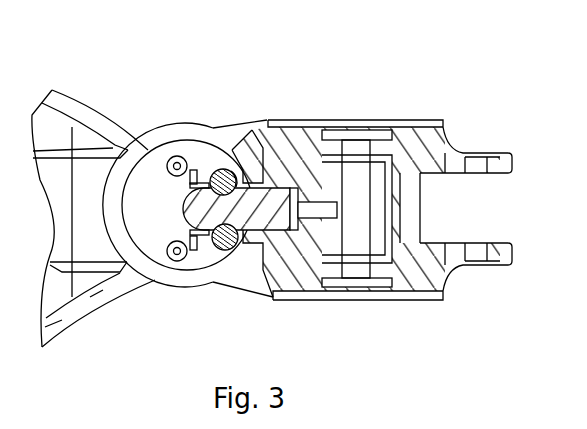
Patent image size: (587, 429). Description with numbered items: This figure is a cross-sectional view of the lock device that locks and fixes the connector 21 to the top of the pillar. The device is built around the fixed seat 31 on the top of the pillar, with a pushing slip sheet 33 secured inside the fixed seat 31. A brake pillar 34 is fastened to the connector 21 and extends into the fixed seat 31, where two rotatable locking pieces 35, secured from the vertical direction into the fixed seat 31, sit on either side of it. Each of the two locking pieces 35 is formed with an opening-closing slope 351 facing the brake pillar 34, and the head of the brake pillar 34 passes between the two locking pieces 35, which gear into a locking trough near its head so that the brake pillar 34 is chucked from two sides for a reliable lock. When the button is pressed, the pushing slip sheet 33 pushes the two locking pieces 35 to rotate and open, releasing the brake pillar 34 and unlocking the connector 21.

The connector 21 is at (443, 135).
The fixed seat 31 is at (125, 137).
The pushing slip sheet 33 is at (196, 169).
The brake pillar 34 is at (279, 207).
The locking pieces 35 is at (222, 168).
The opening-closing slope 351 is at (233, 172).